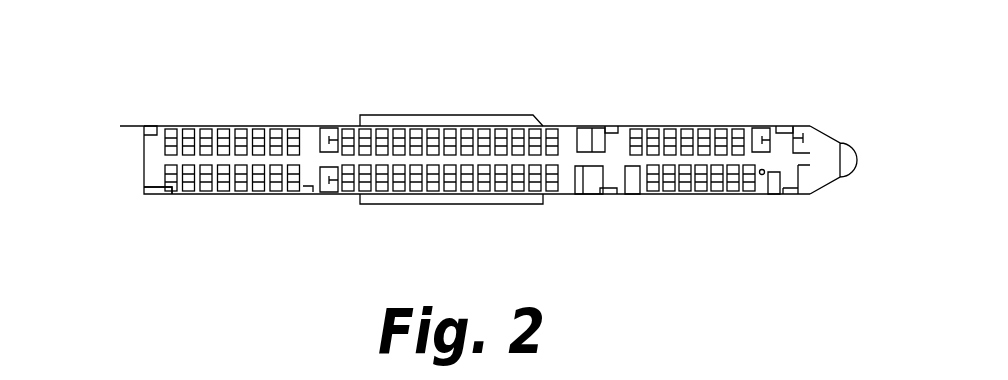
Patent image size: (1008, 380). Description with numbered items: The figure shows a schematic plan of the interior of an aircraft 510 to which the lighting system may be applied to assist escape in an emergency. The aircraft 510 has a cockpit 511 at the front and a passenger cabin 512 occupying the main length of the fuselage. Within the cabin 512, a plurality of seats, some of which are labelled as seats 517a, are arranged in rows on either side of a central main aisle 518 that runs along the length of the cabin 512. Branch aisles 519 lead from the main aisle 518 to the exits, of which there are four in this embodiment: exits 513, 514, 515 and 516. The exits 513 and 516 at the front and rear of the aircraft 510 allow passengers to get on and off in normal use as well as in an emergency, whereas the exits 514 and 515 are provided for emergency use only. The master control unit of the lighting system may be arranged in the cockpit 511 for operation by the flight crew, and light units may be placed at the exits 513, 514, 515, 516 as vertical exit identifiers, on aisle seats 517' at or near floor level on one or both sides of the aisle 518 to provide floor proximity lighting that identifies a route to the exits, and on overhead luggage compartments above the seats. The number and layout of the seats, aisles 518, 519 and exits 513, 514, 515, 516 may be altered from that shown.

The aircraft 510 is at (700, 83).
The cockpit 511 is at (835, 165).
The passenger cabin 512 is at (461, 112).
The exit 513 is at (793, 196).
The exit 514 is at (611, 196).
The exit 515 is at (313, 193).
The exit 516 is at (157, 193).
The seat rows 517a is at (210, 128).
The aisle seats 517' is at (451, 162).
The central main aisle 518 is at (262, 158).
The branch aisles 519 is at (617, 178).